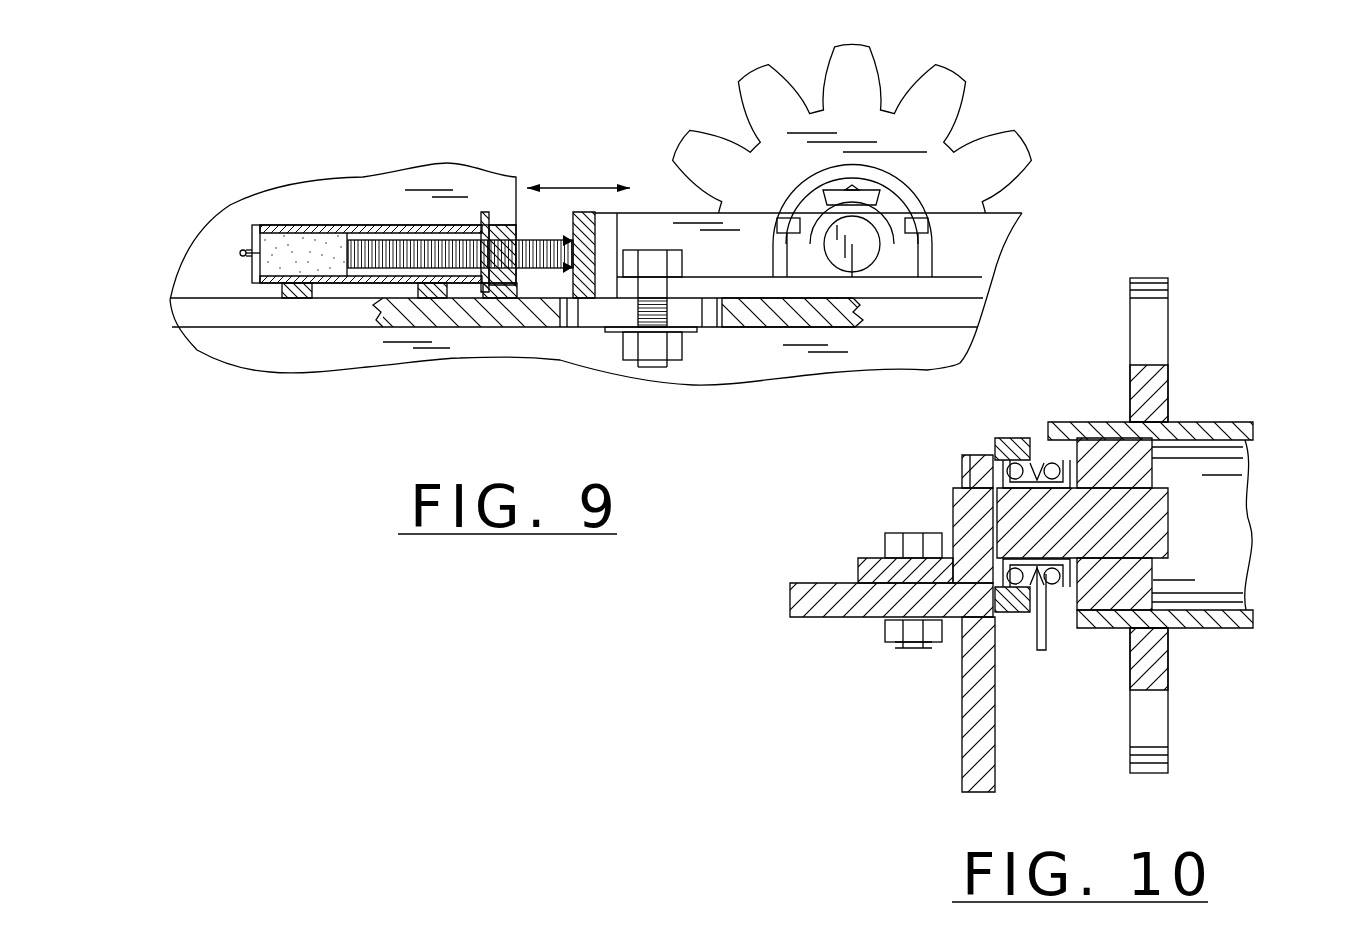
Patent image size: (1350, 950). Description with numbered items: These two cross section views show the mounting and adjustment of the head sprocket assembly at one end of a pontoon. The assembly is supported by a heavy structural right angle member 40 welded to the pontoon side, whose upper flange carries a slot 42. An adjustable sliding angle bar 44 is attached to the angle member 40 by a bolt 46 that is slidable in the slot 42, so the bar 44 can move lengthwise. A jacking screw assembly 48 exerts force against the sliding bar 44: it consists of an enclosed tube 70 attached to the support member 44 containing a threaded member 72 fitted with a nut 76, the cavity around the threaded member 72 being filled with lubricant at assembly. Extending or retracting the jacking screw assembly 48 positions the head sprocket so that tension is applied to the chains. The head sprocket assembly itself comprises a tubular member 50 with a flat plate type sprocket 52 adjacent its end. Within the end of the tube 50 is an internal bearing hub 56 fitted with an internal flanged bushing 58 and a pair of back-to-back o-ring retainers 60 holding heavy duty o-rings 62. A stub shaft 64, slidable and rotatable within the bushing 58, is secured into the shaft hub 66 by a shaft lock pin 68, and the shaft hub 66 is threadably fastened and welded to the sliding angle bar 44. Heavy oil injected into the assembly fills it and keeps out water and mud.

In FIG. 10, the structural right angle member 40 is at (792, 618).
In FIG. 9, the slot 42 is at (704, 327).
In FIG. 9, the adjustable sliding angle bar 44 is at (957, 277).
In FIG. 10, the adjustable sliding angle bar 44 is at (857, 573).
In FIG. 9, the bolt 46 is at (653, 250).
In FIG. 10, the bolt 46 is at (915, 533).
In FIG. 9, the jacking screw assembly 48 is at (388, 190).
In FIG. 10, the tubular member 50 is at (1225, 420).
In FIG. 9, the flat plate type sprocket 52 is at (930, 125).
In FIG. 10, the flat plate type sprocket 52 is at (1168, 332).
In FIG. 10, the internal bearing hub 56 is at (1058, 627).
In FIG. 10, the internal flanged bushing 58 is at (1153, 567).
In FIG. 10, the o-ring retainer 60 is at (1038, 620).
In FIG. 10, the o-ring 62 is at (1007, 440).
In FIG. 10, the stub shaft 64 is at (1168, 532).
In FIG. 9, the shaft hub 66 is at (890, 258).
In FIG. 10, the shaft hub 66 is at (1013, 437).
In FIG. 10, the shaft lock pin 68 is at (985, 453).
In FIG. 9, the enclosed tube 70 is at (280, 227).
In FIG. 9, the threaded member 72 is at (575, 227).
In FIG. 9, the nut 76 is at (503, 227).